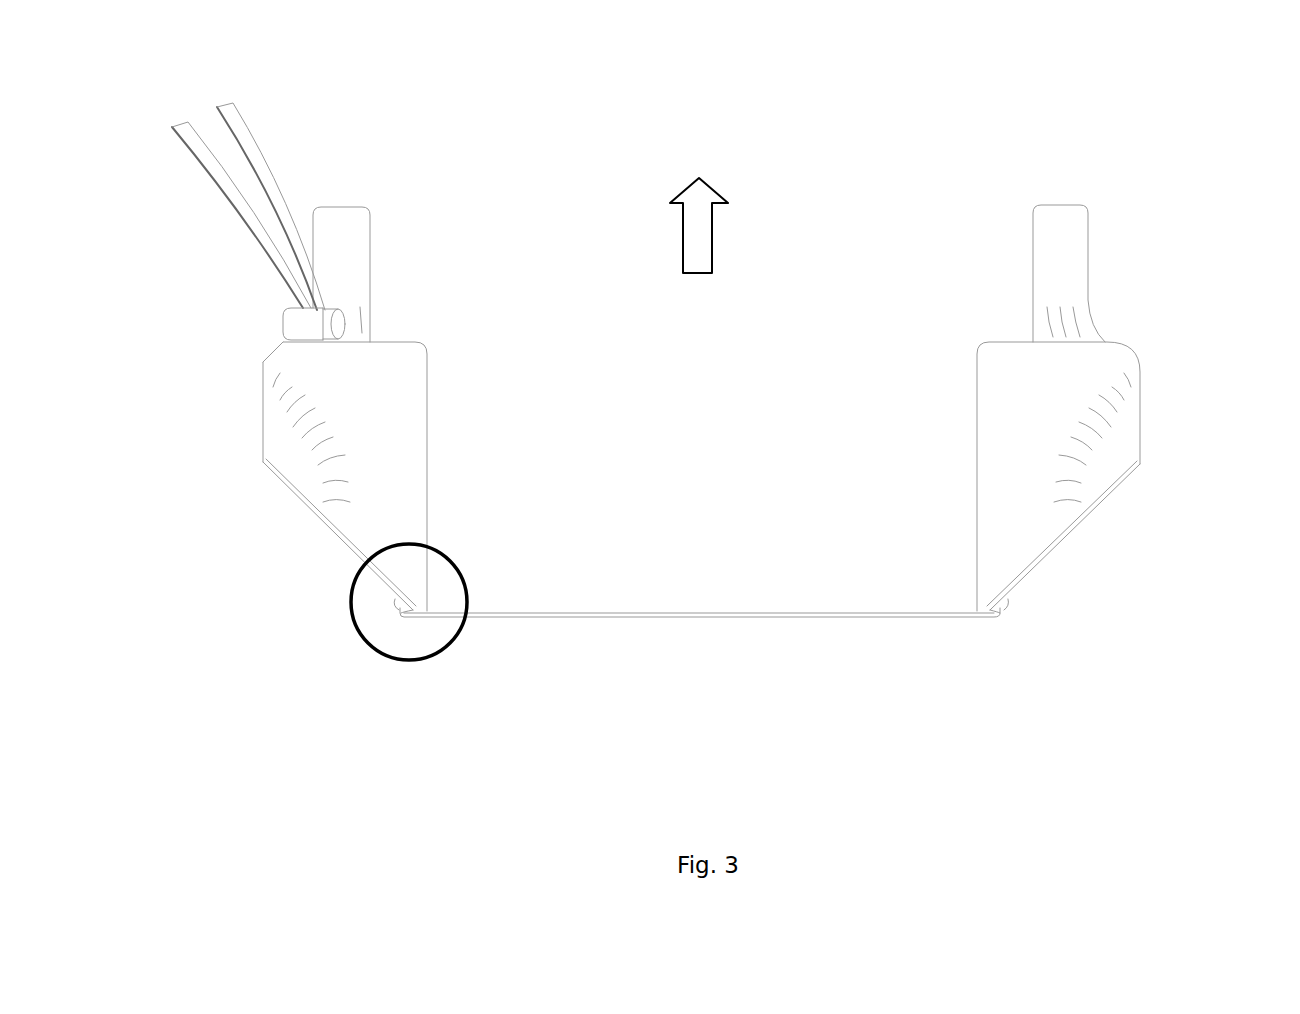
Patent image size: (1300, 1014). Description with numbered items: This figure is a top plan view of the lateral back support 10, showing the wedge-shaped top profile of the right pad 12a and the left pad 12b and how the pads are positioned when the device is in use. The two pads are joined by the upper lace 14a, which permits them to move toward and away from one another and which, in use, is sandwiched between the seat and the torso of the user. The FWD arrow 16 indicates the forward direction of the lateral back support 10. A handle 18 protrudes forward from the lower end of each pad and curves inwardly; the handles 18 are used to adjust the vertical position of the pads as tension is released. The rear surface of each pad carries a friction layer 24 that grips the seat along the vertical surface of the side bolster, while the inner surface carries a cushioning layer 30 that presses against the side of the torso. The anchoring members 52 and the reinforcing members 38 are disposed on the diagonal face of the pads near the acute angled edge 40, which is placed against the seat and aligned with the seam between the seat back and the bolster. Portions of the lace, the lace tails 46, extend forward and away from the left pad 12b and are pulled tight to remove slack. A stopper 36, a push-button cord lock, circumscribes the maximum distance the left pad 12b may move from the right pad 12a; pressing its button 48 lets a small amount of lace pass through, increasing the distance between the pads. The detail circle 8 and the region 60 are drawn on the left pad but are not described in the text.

The detail circle 8 is at (430, 660).
The lateral back support 10 is at (833, 684).
The right pad 12a is at (1157, 408).
The left pad 12b is at (256, 421).
The upper lace 14a is at (618, 622).
The FWD arrow 16 is at (703, 243).
The handle 18 is at (363, 232).
The friction layer 24 is at (322, 528).
The cushioning layer 30 is at (430, 460).
The stopper 36 is at (297, 327).
The reinforcing member 38 is at (398, 610).
The acute angled edge 40 is at (427, 610).
The lace tail 46 is at (270, 167).
The button 48 is at (347, 322).
The anchoring member 52 is at (1007, 608).
The housing shoulder 60 is at (297, 340).